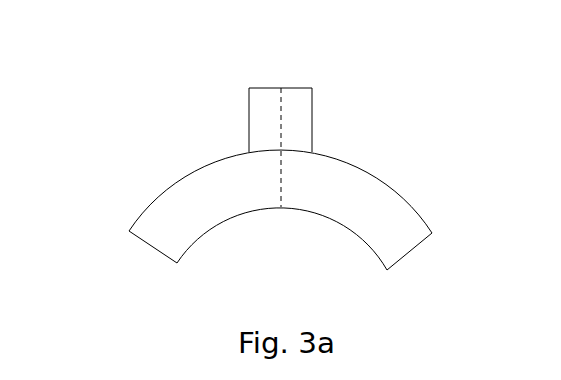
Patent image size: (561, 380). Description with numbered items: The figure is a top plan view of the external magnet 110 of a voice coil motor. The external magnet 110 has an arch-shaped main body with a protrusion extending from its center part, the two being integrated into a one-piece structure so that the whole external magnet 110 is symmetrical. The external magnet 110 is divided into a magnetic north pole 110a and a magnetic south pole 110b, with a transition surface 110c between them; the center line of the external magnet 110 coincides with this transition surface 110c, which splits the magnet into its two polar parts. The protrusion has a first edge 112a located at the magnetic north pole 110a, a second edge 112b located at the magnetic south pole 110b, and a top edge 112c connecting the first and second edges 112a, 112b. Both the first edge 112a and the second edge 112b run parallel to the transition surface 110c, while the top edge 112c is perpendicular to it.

The external magnet 110 is at (79, 47).
The magnetic north pole 110a is at (189, 230).
The magnetic south pole 110b is at (378, 225).
The transition surface 110c is at (280, 173).
The first edge 112a is at (249, 128).
The second edge 112b is at (312, 130).
The top edge 112c is at (293, 87).